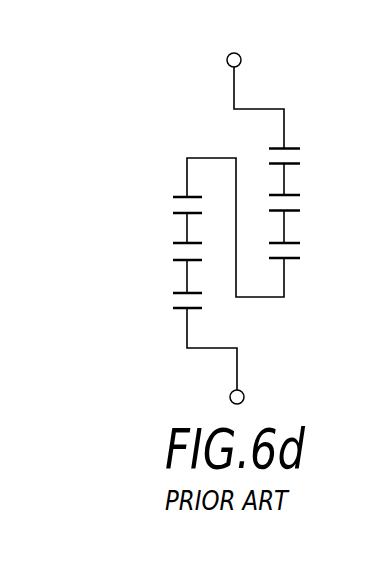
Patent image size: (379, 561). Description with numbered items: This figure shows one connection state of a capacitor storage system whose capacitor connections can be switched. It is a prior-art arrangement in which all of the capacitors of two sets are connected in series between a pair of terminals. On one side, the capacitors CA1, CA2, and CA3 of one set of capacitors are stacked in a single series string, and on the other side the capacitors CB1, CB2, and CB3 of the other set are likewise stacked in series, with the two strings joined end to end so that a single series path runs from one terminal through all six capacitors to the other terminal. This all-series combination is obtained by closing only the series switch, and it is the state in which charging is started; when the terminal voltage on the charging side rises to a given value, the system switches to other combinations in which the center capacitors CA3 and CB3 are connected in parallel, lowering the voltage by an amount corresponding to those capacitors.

The capacitor CA1 is at (165, 303).
The capacitor CA2 is at (165, 258).
The center capacitor CA3 is at (165, 206).
The capacitor CB1 is at (306, 157).
The capacitor CB2 is at (306, 206).
The center capacitor CB3 is at (306, 253).